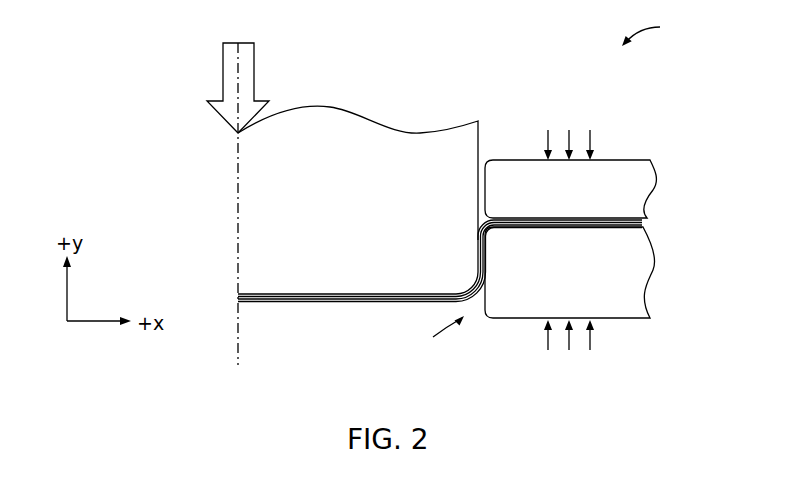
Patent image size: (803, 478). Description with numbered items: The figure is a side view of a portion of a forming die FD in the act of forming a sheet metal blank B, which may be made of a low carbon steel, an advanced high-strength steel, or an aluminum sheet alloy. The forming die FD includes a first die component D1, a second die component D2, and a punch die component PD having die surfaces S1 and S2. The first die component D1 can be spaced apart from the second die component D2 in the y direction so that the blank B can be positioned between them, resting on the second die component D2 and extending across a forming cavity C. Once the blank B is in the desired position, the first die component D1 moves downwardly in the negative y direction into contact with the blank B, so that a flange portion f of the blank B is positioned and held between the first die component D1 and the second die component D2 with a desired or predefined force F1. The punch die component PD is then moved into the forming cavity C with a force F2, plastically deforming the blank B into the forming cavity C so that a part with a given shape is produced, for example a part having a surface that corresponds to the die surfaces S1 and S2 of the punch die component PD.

The force F2 is at (238, 88).
The punch die component PD is at (365, 115).
The forming die FD is at (656, 32).
The force F1 is at (569, 246).
The first die component D1 is at (641, 160).
The second die component D2 is at (627, 320).
The die surface S1 is at (266, 294).
The die surface S2 is at (478, 250).
The flange portion f is at (590, 228).
The sheet metal blank B is at (390, 303).
The forming cavity C is at (438, 335).